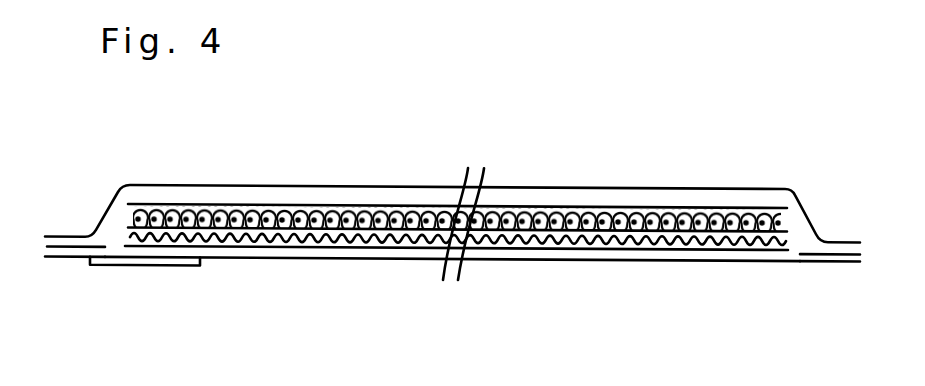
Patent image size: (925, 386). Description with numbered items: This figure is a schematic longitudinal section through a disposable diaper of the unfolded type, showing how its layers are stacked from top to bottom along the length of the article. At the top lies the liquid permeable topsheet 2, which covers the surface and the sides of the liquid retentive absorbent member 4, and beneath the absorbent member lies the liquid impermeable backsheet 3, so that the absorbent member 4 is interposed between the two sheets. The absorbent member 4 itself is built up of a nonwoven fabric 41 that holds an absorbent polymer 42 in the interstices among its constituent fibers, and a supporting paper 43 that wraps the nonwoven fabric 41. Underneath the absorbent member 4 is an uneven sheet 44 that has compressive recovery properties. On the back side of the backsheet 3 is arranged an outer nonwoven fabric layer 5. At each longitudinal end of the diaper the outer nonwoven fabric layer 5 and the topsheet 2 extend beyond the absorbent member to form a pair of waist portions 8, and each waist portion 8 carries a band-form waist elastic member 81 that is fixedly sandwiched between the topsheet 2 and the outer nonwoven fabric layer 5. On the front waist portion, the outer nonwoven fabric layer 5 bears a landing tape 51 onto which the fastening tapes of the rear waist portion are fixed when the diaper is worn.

The topsheet 2 is at (88, 228).
The backsheet 3 is at (352, 247).
The absorbent member 4 is at (457, 291).
The nonwoven fabric 41 is at (535, 226).
The absorbent polymer 42 is at (556, 229).
The supporting paper 43 is at (630, 248).
The uneven sheet 44 is at (503, 318).
The outer nonwoven fabric layer 5 is at (282, 259).
The landing tape 51 is at (165, 266).
The waist portion 8 is at (90, 336).
The waist elastic member 81 is at (66, 249).